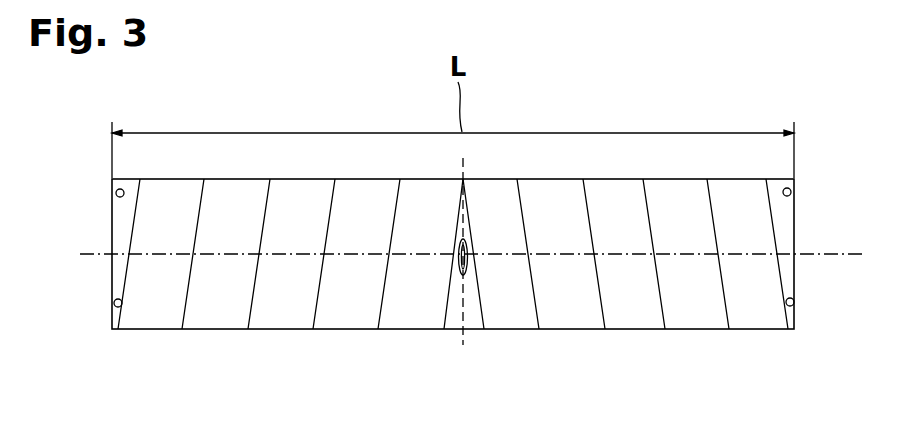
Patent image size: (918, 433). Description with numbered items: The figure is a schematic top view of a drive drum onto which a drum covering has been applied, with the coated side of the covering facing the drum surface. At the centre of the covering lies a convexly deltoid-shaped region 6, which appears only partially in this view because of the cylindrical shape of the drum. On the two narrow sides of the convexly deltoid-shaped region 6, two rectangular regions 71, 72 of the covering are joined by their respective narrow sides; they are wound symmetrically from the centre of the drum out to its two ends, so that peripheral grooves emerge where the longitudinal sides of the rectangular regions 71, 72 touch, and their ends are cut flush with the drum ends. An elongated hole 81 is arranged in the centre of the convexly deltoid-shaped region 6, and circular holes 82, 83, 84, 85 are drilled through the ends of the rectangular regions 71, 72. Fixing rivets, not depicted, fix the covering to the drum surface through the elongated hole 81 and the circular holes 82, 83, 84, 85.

The convexly deltoid-shaped region 6 is at (453, 318).
The rectangular region 71 is at (343, 318).
The rectangular region 72 is at (695, 318).
The elongated hole 81 is at (468, 265).
The circular hole 82 is at (115, 193).
The circular hole 83 is at (113, 303).
The circular hole 84 is at (792, 191).
The circular hole 85 is at (795, 301).